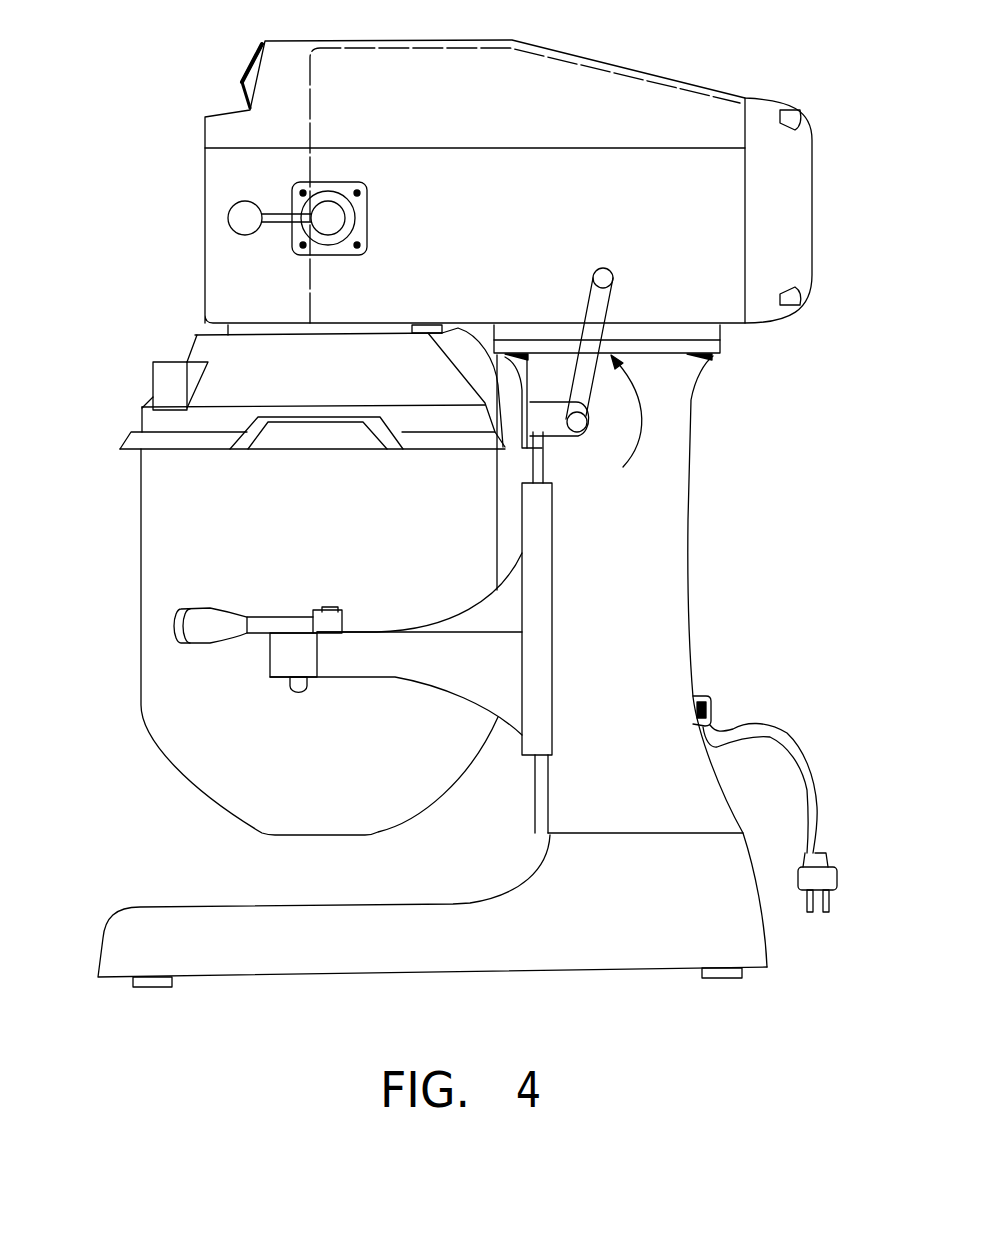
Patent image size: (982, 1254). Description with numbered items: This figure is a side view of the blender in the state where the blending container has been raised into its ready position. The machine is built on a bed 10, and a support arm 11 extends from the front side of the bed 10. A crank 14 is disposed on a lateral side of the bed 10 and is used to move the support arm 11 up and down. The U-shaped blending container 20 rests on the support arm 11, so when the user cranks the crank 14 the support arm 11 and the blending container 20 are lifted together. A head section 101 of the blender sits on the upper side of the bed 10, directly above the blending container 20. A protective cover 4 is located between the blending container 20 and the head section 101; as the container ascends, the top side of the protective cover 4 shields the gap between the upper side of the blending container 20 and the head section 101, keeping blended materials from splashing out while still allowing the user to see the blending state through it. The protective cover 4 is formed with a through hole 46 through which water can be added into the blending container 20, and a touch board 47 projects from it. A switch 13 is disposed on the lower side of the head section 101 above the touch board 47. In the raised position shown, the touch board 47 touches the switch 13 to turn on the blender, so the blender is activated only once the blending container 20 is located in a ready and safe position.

The bed 10 is at (672, 613).
The head section 101 is at (225, 172).
The protective cover 4 is at (205, 355).
The through hole 46 is at (165, 365).
The switch 13 is at (422, 325).
The touch board 47 is at (485, 365).
The crank 14 is at (593, 320).
The blending container 20 is at (162, 583).
The support arm 11 is at (367, 652).